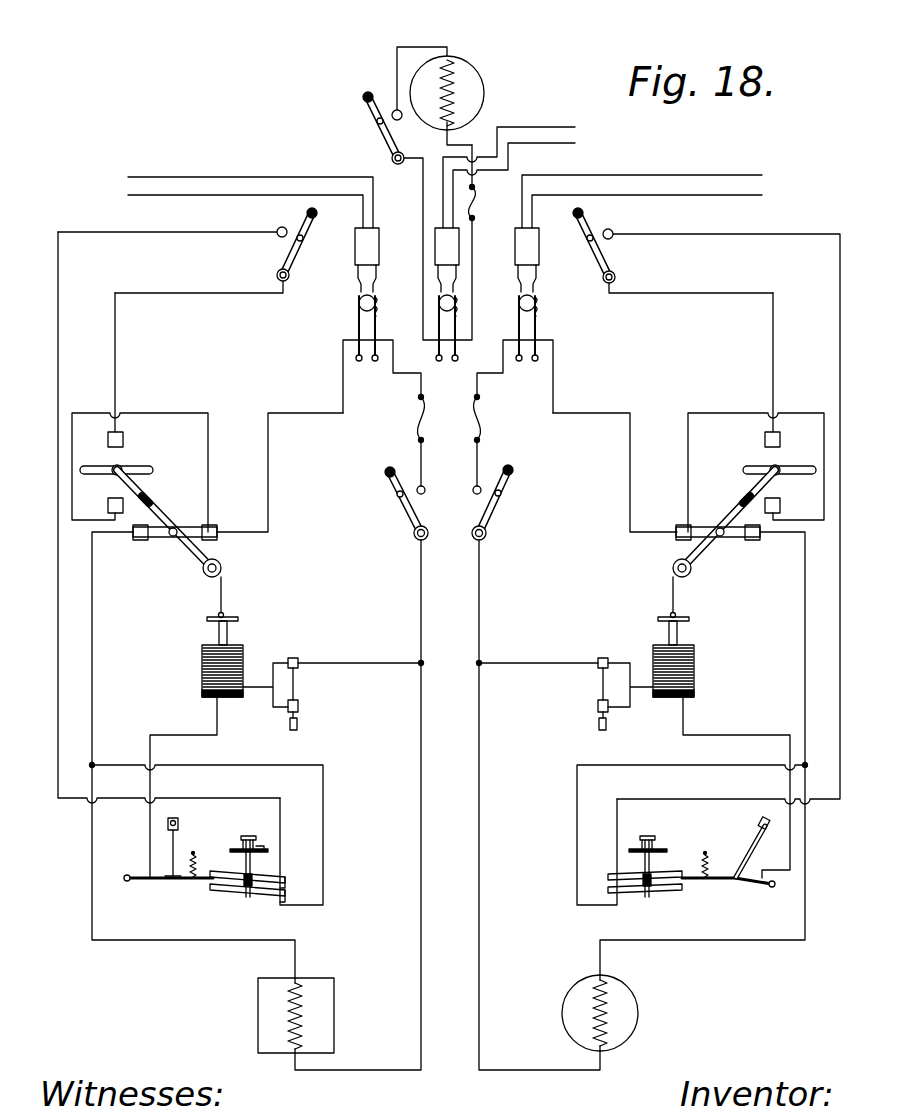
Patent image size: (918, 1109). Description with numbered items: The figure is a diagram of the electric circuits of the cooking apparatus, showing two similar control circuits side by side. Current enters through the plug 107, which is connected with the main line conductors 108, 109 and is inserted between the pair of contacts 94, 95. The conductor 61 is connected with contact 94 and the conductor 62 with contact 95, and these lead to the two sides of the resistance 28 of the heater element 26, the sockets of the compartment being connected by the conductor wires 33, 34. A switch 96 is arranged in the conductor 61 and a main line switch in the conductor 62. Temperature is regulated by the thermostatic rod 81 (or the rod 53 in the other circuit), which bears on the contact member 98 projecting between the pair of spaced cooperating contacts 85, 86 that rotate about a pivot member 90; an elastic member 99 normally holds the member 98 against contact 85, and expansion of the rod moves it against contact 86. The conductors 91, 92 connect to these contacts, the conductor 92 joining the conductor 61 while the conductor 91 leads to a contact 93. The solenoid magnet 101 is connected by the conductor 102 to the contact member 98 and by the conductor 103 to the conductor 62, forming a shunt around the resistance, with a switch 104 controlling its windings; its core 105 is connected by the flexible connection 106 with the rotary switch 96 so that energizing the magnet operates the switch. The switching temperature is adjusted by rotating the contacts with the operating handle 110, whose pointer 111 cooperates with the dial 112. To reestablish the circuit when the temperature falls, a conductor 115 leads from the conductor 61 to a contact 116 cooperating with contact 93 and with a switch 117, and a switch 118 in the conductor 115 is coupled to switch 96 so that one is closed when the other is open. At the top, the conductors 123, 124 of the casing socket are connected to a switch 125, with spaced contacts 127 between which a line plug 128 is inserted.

The conductor 123 is at (415, 44).
The conductor 124 is at (458, 145).
The switch 125 is at (380, 128).
The main line conductor 108 is at (198, 177).
The main line conductor 109 is at (222, 198).
The contact 93 is at (280, 228).
The switch 117 is at (302, 247).
The plug 107 is at (367, 252).
The contact 116 is at (287, 285).
The contact 94 is at (357, 322).
The contact 95 is at (380, 330).
The conductor 115 is at (124, 378).
The switch 118 is at (118, 460).
The conductor wire 61 is at (270, 468).
The switch 96 is at (165, 538).
The connection 106 is at (217, 595).
The core 105 is at (232, 633).
The solenoid magnet 101 is at (205, 668).
The conductor 103 is at (363, 651).
The switch 104 is at (298, 682).
The conductor 102 is at (163, 737).
The conductor wire 91 is at (246, 799).
The dial 112 is at (242, 847).
The operating handle 110 is at (251, 836).
The pointer 111 is at (262, 848).
The thermostatic rod 81 is at (178, 851).
The elastic member 99 is at (195, 870).
The contact 85 is at (268, 876).
The conductor wire 92 is at (325, 878).
The contact member 98 is at (158, 881).
The contact 86 is at (228, 885).
The pivot member 90 is at (253, 898).
The resistance 28 is at (288, 1000).
The heater element 26 is at (258, 1025).
The conductor 62 is at (392, 1072).
The conductor wire 34 is at (557, 1071).
The conductor wire 33 is at (715, 941).
The thermostatic rod 53 is at (757, 847).
The spaced contacts 127 is at (448, 366).
The line plug 128 is at (450, 248).